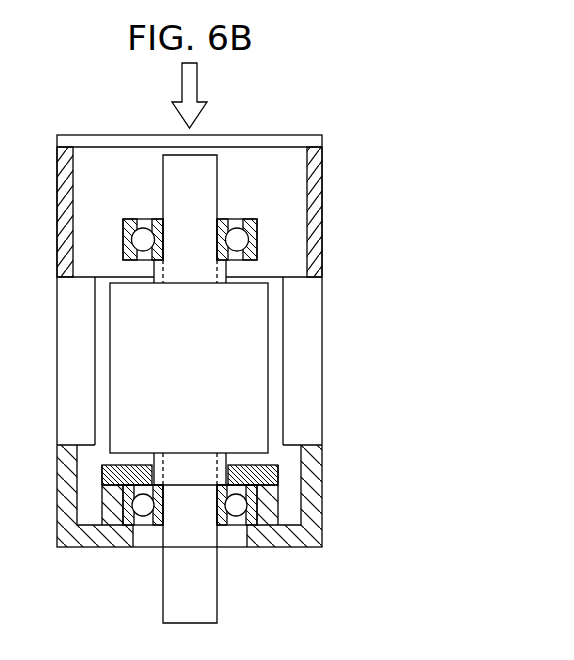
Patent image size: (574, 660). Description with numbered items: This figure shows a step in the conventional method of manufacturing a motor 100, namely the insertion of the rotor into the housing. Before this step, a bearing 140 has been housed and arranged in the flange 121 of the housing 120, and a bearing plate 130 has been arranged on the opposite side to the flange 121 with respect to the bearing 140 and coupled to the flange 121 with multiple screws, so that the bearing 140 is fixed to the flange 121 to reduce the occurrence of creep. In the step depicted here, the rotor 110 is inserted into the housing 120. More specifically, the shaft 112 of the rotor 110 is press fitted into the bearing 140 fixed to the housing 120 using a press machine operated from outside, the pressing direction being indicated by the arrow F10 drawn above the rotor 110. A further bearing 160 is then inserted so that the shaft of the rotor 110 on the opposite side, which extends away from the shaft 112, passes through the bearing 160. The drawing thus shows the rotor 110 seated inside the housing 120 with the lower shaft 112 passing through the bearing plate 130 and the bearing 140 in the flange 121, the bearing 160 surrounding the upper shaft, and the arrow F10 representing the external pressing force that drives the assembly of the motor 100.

The motor 100 is at (420, 112).
The rotor 110 is at (221, 182).
The shaft 112 is at (217, 585).
The housing 120 is at (326, 365).
The flange 121 is at (325, 530).
The bearing plate 130 is at (278, 474).
The bearing 140 is at (257, 500).
The bearing 160 is at (257, 237).
The arrow F10 is at (197, 80).